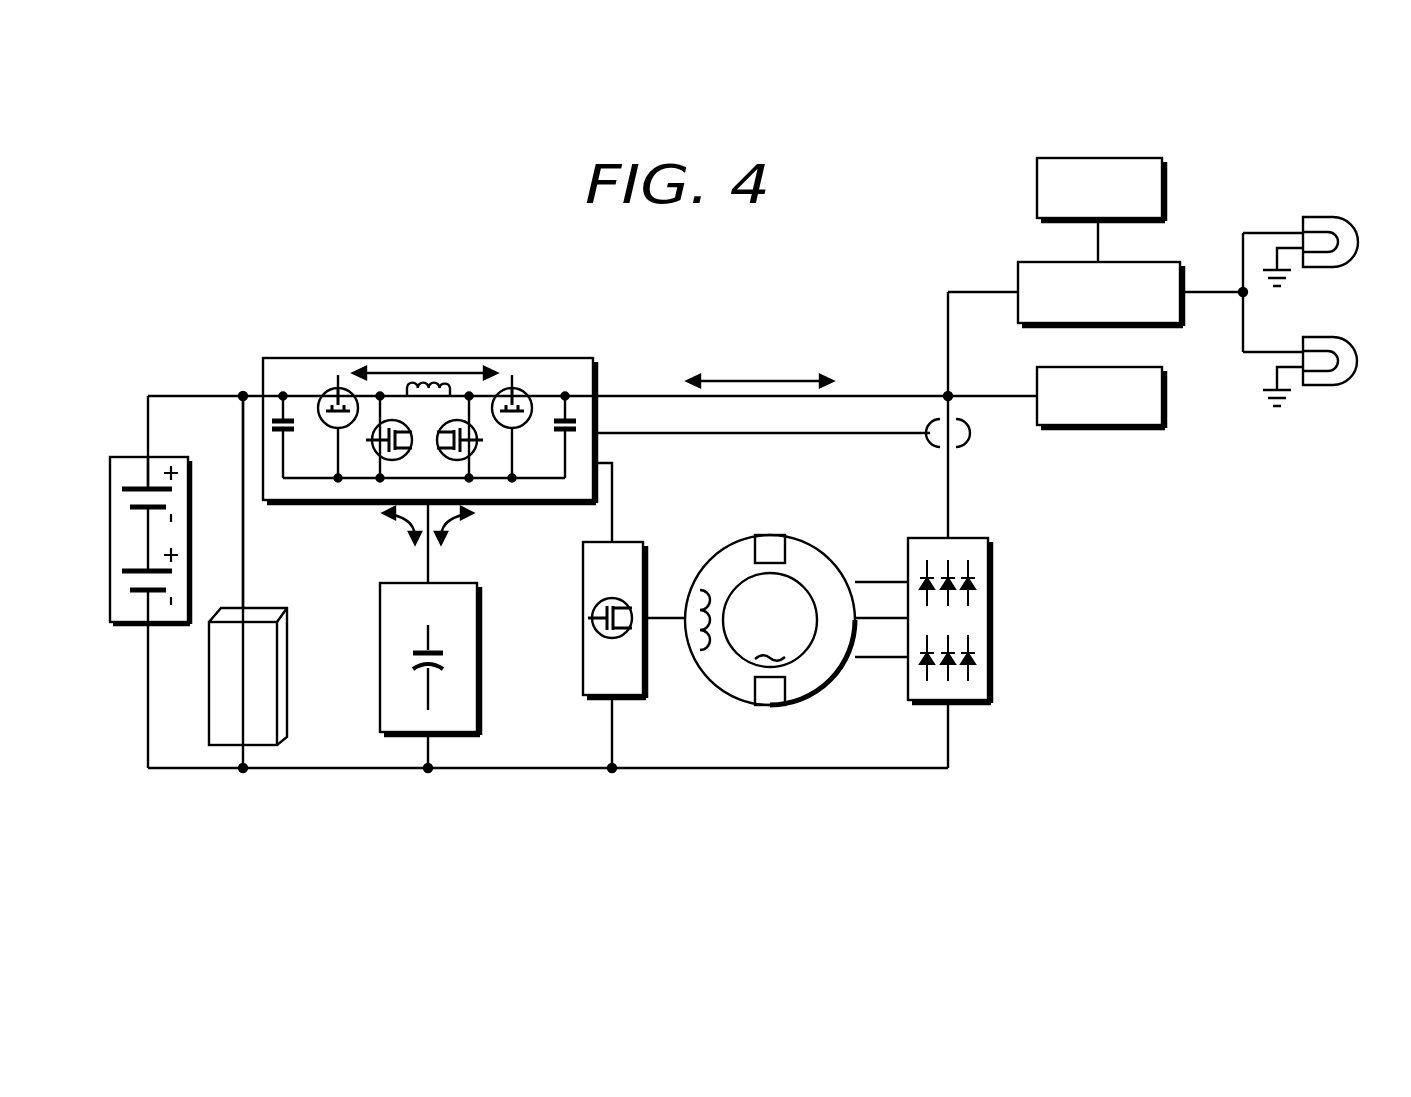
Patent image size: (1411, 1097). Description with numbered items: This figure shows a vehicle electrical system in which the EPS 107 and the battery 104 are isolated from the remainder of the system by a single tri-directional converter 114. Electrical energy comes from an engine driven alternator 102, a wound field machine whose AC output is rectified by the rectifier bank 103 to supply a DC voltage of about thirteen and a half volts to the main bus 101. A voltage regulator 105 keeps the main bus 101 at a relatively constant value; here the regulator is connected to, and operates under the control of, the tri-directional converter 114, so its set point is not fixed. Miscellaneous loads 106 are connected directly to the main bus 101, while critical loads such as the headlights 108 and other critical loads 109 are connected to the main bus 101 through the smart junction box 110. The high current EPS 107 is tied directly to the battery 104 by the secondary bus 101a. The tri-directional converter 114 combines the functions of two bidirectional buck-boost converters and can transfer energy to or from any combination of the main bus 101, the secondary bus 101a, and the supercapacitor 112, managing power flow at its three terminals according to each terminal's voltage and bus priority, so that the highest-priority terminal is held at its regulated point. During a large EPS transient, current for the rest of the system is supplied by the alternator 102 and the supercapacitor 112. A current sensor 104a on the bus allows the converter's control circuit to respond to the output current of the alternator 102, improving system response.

The main bus 101 is at (882, 395).
The secondary bus 101a is at (199, 397).
The alternator 102 is at (808, 707).
The rectifier bank 103 is at (990, 630).
The battery 104 is at (108, 561).
The current sensor 104a is at (962, 445).
The voltage regulator 105 is at (622, 700).
The miscellaneous loads 106 is at (1165, 402).
The EPS 107 is at (280, 682).
The headlights 108 is at (1352, 262).
The other critical loads 109 is at (1128, 158).
The smart junction box 110 is at (1040, 262).
The supercapacitor 112 is at (480, 620).
The tri-directional converter 114 is at (593, 364).